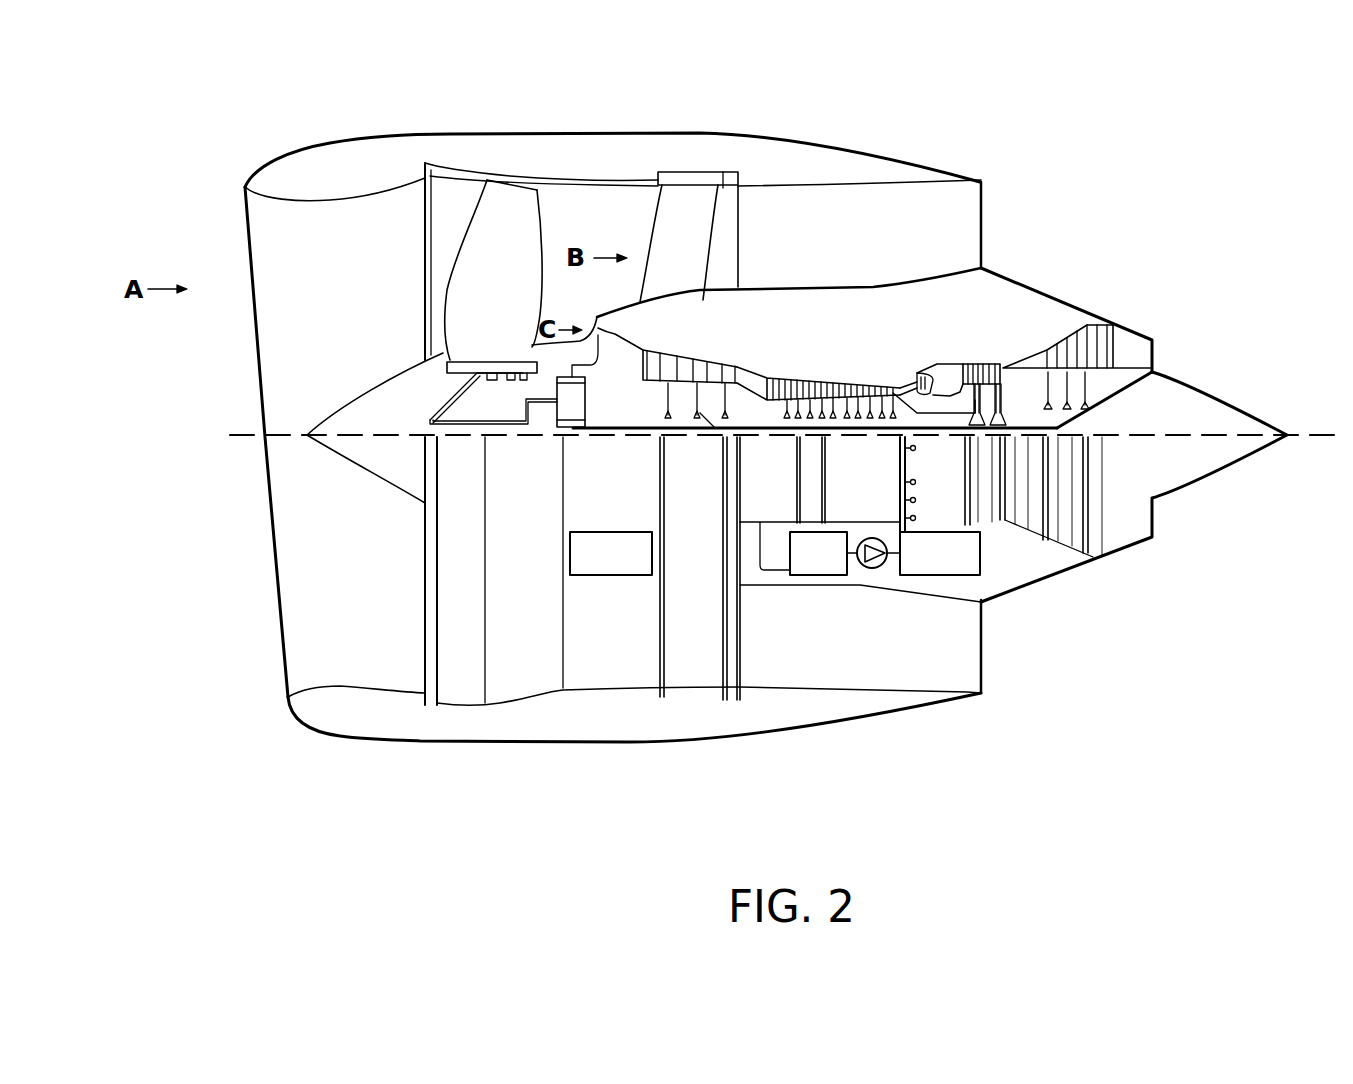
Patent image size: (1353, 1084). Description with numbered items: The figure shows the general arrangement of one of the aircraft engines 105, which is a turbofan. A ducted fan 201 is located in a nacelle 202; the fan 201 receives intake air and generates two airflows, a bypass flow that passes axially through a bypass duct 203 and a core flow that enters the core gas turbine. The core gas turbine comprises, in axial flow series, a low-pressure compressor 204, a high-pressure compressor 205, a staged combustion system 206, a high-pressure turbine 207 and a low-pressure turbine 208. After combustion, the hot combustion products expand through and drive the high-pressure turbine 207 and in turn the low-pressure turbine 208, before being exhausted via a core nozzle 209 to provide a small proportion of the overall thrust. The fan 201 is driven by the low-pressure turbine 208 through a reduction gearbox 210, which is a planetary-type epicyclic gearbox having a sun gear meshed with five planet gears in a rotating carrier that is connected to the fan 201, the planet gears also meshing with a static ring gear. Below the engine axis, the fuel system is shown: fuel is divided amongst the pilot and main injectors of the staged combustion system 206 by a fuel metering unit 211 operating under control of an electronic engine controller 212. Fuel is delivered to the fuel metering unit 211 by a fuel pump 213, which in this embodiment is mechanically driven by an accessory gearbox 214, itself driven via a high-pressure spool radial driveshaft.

The engine 105 is at (186, 107).
The fan 201 is at (513, 308).
The nacelle 202 is at (340, 140).
The bypass duct 203 is at (622, 226).
The low-pressure compressor 204 is at (700, 350).
The high-pressure compressor 205 is at (832, 368).
The staged combustion system 206 is at (932, 360).
The high-pressure turbine 207 is at (982, 362).
The low-pressure turbine 208 is at (1073, 323).
The core nozzle 209 is at (1143, 340).
The reduction gearbox 210 is at (593, 406).
The fuel metering unit 211 is at (980, 570).
The electronic engine controller 212 is at (570, 567).
The fuel pump 213 is at (883, 568).
The accessory gearbox 214 is at (823, 572).